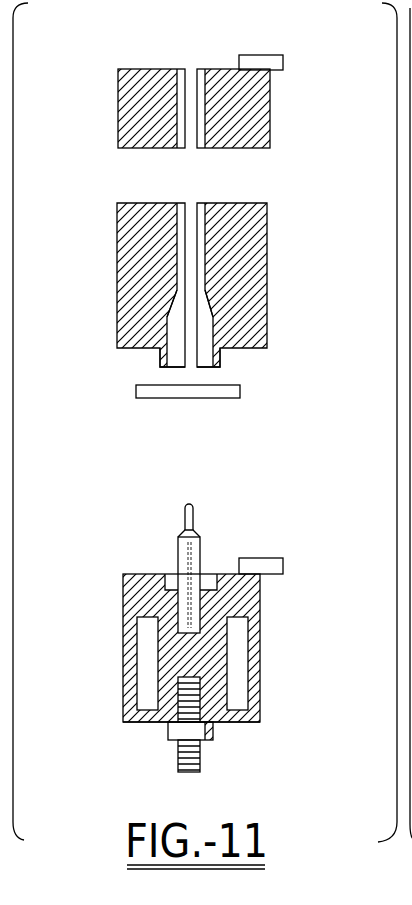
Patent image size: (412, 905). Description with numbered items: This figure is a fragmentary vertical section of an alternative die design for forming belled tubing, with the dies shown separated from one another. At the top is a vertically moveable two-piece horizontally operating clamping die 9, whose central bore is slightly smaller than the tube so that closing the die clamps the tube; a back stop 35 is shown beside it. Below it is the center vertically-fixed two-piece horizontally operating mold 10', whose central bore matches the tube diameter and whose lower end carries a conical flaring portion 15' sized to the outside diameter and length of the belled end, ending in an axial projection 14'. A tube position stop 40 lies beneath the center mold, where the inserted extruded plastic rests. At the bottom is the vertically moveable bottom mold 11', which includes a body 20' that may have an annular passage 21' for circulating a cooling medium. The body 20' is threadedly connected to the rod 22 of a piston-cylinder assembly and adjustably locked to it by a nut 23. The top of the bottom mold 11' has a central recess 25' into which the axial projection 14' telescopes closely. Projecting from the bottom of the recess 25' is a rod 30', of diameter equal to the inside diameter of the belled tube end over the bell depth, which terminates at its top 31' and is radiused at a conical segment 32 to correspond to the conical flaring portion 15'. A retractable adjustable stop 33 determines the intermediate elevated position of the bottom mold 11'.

The clamping die 9 is at (118, 105).
The back stop 35 is at (275, 55).
The center mold 10' is at (148, 285).
The conical flaring portion 15' is at (141, 311).
The axial projection 14' is at (145, 365).
The tube position stop 40 is at (240, 392).
The bottom mold 11' is at (142, 648).
The central recess 25' is at (221, 554).
The rod 30' is at (157, 578).
The top of rod 31' is at (155, 504).
The conical segment 32 is at (199, 535).
The retractable adjustable stop 33 is at (283, 560).
The annular passage 21' is at (159, 663).
The body 20' is at (165, 740).
The rod of piston-cylinder assembly 22 is at (200, 757).
The nut 23 is at (168, 735).